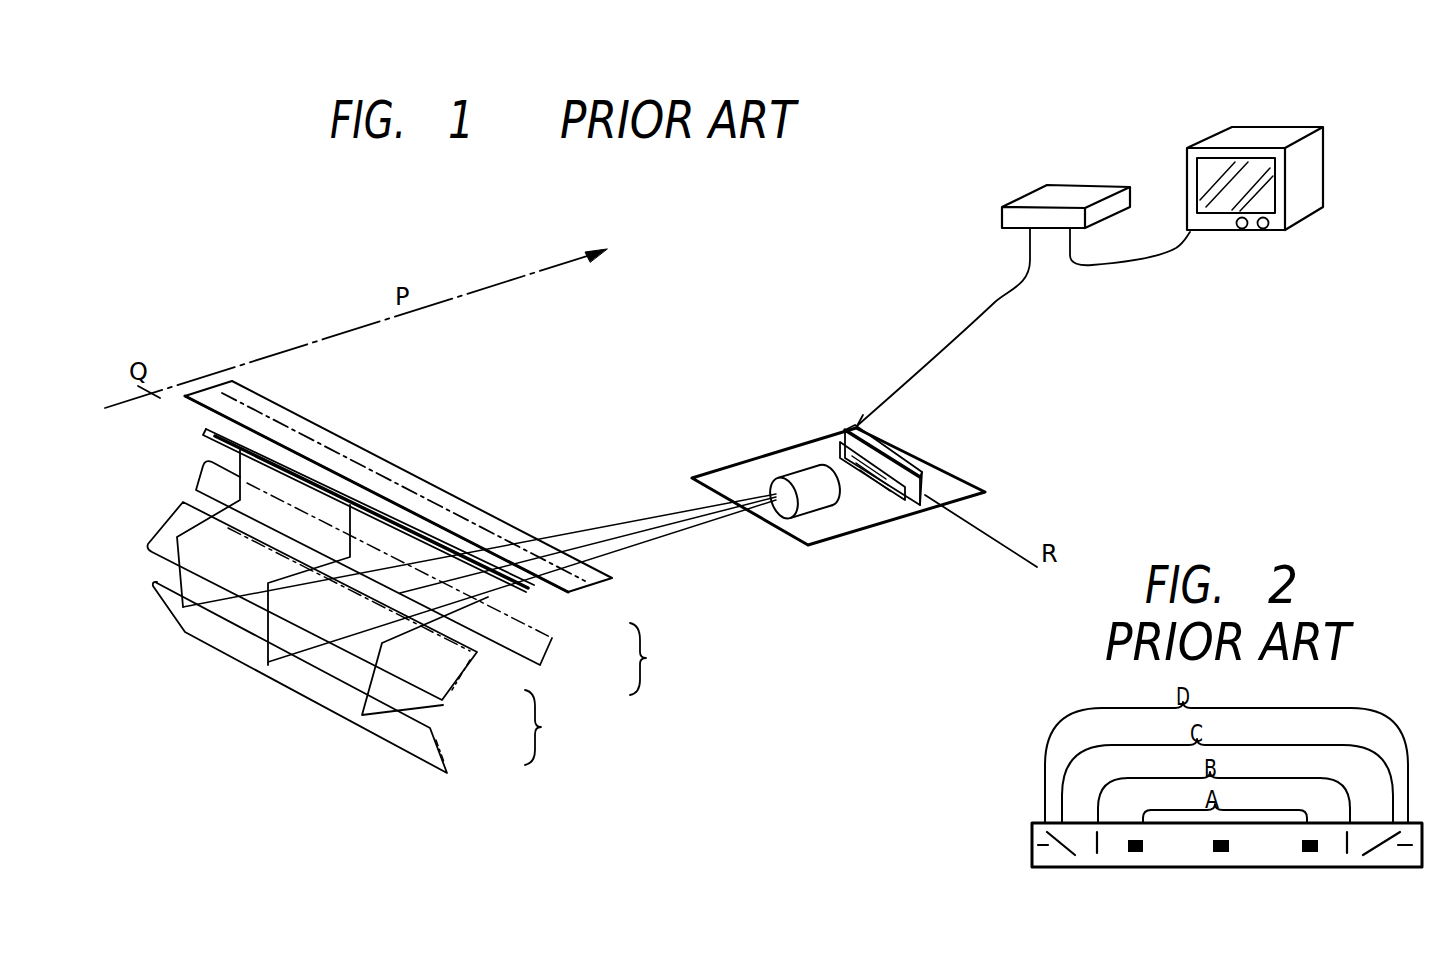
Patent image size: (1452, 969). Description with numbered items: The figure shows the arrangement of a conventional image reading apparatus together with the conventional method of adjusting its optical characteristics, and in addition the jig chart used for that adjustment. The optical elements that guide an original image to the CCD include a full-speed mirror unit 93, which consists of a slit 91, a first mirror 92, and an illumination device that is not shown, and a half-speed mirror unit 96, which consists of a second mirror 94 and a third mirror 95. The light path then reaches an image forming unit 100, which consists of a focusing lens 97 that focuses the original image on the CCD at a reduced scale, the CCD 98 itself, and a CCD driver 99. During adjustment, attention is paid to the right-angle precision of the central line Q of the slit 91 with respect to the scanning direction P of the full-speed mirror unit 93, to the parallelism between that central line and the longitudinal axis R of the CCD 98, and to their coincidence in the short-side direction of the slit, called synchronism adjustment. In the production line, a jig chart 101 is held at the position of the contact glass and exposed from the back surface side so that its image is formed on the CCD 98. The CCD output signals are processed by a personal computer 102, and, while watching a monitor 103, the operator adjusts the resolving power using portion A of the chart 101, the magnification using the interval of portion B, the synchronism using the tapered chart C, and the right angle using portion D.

In FIG. 1, the slit 91 is at (530, 590).
In FIG. 1, the first mirror 92 is at (553, 652).
In FIG. 1, the full-speed mirror unit 93 is at (651, 659).
In FIG. 1, the second mirror 94 is at (478, 672).
In FIG. 1, the third mirror 95 is at (452, 750).
In FIG. 1, the half-speed mirror unit 96 is at (546, 727).
In FIG. 1, the focusing lens 97 is at (813, 512).
In FIG. 1, the CCD 98 is at (900, 478).
In FIG. 1, the CCD driver 99 is at (875, 450).
In FIG. 1, the image forming unit 100 is at (780, 534).
In FIG. 1, the jig chart 101 is at (308, 420).
In FIG. 2, the jig chart 101 is at (1385, 868).
In FIG. 1, the personal computer 102 is at (1062, 190).
In FIG. 1, the monitor 103 is at (1224, 136).